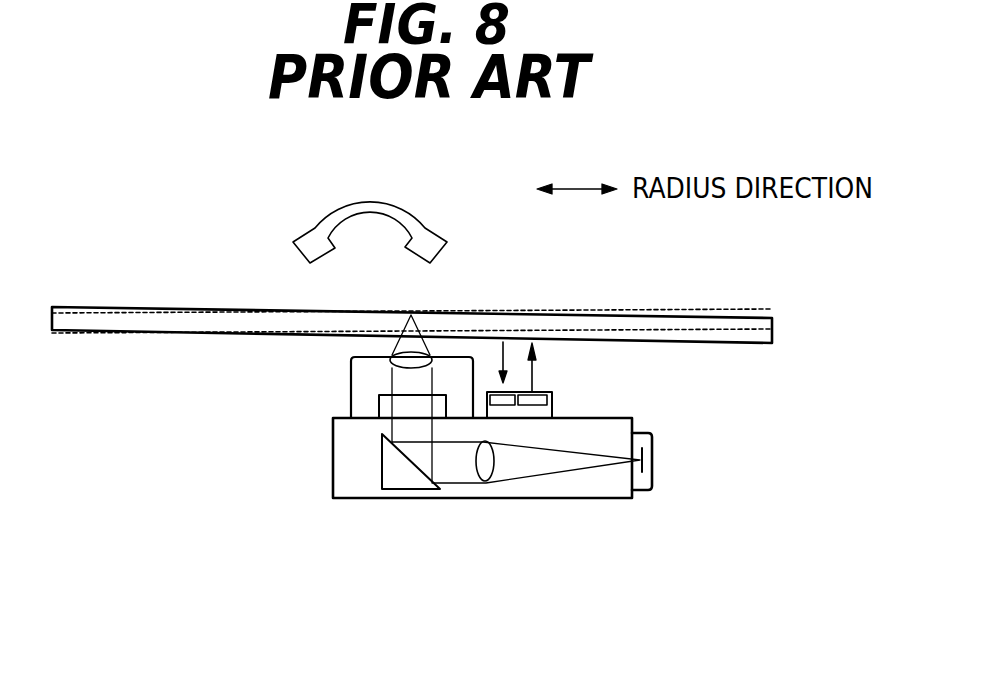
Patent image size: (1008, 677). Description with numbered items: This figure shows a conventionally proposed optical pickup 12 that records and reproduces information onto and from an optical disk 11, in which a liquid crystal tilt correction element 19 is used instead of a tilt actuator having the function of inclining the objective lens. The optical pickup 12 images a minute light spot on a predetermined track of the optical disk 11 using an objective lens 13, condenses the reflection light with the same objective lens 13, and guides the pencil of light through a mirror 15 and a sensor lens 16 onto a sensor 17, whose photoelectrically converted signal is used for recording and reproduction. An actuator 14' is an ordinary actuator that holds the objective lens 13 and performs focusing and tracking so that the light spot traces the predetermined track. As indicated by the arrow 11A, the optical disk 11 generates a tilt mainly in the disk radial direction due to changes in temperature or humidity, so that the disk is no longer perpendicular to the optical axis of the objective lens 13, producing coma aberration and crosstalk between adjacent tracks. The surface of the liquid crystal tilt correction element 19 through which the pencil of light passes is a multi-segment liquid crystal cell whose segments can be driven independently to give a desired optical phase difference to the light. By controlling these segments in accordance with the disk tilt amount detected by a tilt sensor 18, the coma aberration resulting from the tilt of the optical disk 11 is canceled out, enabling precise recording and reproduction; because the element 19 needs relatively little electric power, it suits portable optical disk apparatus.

The optical disk 11 is at (282, 322).
The arrow 11A is at (323, 218).
The optical pickup 12 is at (347, 490).
The objective lens 13 is at (430, 358).
The actuator 14' is at (357, 419).
The mirror 15 is at (410, 483).
The sensor lens 16 is at (487, 490).
The sensor 17 is at (642, 490).
The tilt sensor 18 is at (537, 410).
The liquid crystal tilt correction element 19 is at (387, 405).